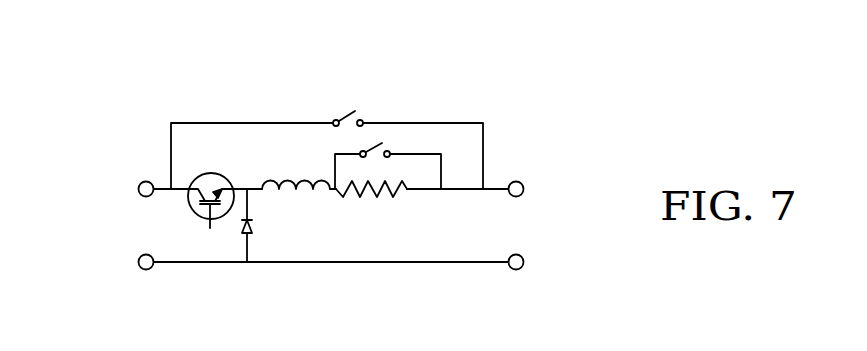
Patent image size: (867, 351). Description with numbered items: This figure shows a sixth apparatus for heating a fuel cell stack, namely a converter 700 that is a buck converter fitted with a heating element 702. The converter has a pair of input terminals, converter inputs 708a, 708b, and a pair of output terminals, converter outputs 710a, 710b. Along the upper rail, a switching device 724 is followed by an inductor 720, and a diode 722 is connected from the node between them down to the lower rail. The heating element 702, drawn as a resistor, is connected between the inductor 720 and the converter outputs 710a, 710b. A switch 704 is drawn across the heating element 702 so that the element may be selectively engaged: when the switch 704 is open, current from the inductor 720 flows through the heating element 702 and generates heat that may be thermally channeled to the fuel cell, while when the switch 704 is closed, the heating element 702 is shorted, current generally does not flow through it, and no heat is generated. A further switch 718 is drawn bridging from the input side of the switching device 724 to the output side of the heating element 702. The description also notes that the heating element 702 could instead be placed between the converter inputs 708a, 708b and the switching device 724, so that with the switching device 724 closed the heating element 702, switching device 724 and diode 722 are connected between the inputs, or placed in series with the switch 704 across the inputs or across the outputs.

The converter 700 is at (455, 48).
The converter input 708a is at (139, 188).
The converter input 708b is at (139, 261).
The converter output 710a is at (524, 189).
The converter output 710b is at (524, 262).
The switching device 724 is at (211, 173).
The inductor 720 is at (270, 178).
The switch 718 is at (343, 118).
The switch 704 is at (372, 146).
The heating element 702 is at (362, 193).
The diode 722 is at (245, 234).